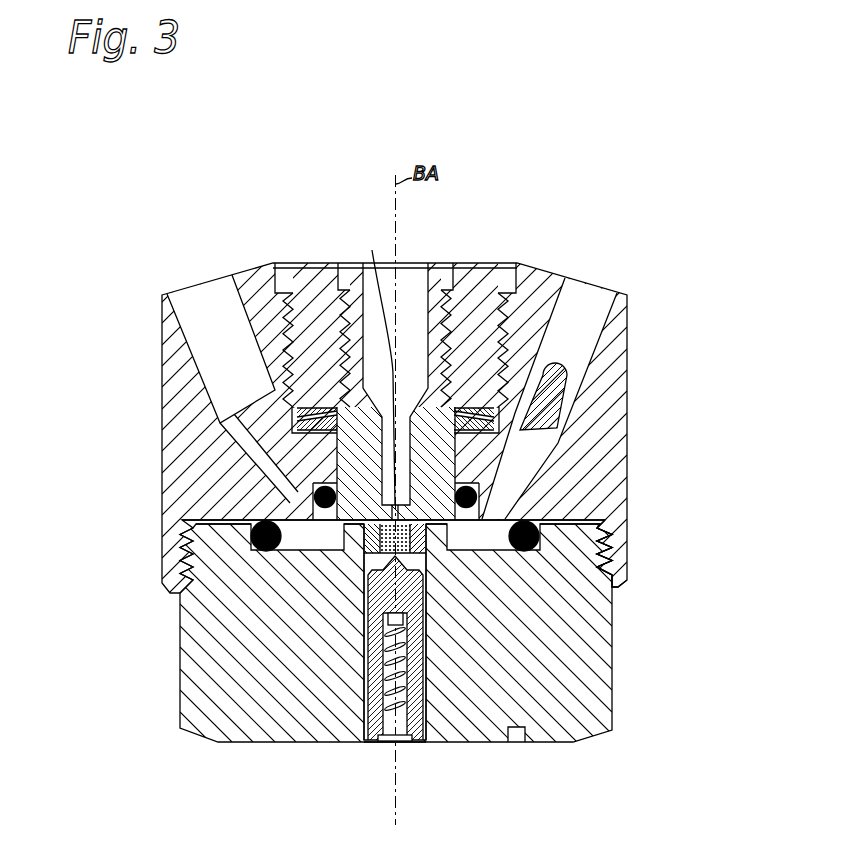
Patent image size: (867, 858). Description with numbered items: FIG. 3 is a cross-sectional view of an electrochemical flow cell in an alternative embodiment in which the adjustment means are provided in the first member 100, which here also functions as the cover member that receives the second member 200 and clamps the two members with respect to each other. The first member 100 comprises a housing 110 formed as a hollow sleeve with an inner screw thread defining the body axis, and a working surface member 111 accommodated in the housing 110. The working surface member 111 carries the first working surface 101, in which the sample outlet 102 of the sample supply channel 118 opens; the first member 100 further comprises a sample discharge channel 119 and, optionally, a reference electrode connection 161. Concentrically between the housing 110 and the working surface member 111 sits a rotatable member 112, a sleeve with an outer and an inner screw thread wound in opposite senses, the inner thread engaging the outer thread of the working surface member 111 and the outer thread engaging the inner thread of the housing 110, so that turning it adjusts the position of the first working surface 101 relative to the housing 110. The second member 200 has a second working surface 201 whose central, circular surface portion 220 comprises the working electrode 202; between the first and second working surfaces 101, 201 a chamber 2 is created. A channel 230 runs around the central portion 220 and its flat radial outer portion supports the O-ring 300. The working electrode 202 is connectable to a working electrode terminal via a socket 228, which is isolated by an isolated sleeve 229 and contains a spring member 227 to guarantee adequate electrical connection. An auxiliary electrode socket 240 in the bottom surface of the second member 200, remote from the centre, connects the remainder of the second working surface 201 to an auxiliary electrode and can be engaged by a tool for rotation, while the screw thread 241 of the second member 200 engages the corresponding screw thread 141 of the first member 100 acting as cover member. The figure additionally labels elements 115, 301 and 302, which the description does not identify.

The first member 100 is at (642, 277).
The housing 110 is at (532, 292).
The sample discharge channel 119 is at (208, 312).
The reference electrode connection 161 is at (587, 312).
The pin 115 is at (513, 445).
The rotatable member 112 is at (312, 293).
The sample supply channel 118 is at (375, 280).
The sample outlet 102 is at (384, 432).
The working surface member 111 is at (336, 446).
The sealing element 302 is at (470, 470).
The sealing ring 301 is at (318, 492).
The first working surface 101 is at (470, 520).
The screw thread 141 is at (615, 536).
The second member 200 is at (560, 676).
The second working surface 201 is at (425, 525).
The screw thread 241 is at (604, 556).
The auxiliary electrode socket 240 is at (516, 739).
The O-ring 300 is at (262, 522).
The chamber 2 is at (296, 547).
The working electrode 202 is at (378, 545).
The channel 230 is at (345, 536).
The central, circular surface portion 220 is at (372, 553).
The socket 228 is at (402, 736).
The spring member 227 is at (390, 664).
The isolated sleeve 229 is at (372, 719).